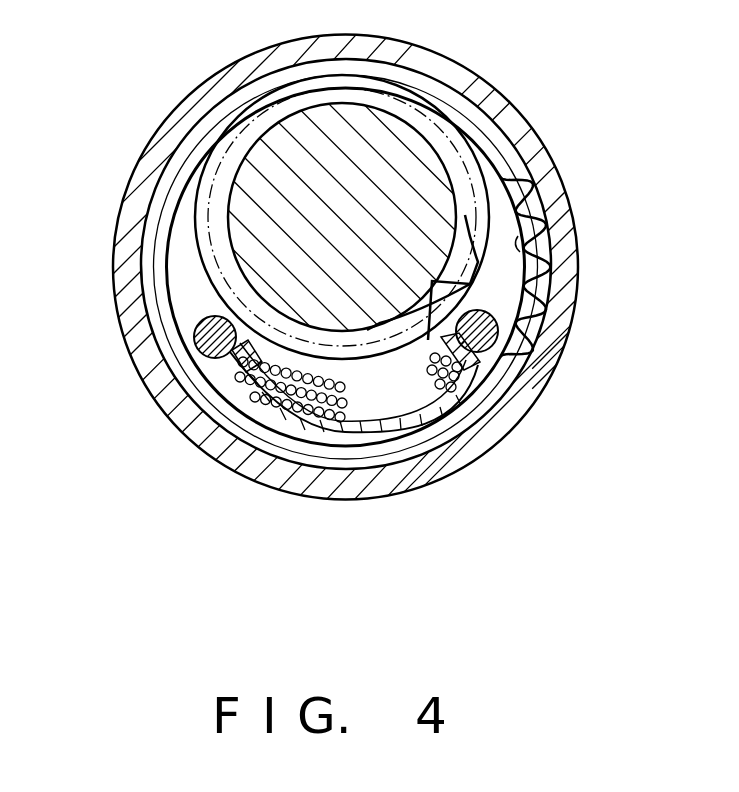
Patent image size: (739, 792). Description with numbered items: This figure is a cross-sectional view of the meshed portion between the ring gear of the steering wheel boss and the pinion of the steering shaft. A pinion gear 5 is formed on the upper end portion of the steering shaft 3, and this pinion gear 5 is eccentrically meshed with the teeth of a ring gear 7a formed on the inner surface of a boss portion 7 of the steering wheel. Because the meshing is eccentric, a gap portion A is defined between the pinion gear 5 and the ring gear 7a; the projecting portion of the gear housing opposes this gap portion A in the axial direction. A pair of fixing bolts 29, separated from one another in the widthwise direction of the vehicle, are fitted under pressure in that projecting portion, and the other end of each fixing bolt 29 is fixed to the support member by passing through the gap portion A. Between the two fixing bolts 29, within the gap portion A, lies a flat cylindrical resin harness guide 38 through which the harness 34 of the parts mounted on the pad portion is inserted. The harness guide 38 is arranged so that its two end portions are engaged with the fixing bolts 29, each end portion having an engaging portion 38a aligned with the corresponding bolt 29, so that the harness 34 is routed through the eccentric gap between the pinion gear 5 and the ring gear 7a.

The steering shaft 3 is at (257, 148).
The pinion gear 5 is at (533, 137).
The boss portion 7 is at (546, 172).
The ring gear 7a is at (520, 248).
The gap portion A is at (182, 281).
The fixing bolts 29 is at (207, 336).
The harness 34 is at (350, 405).
The harness guide 38 is at (473, 353).
The engaging portions 38a is at (176, 400).